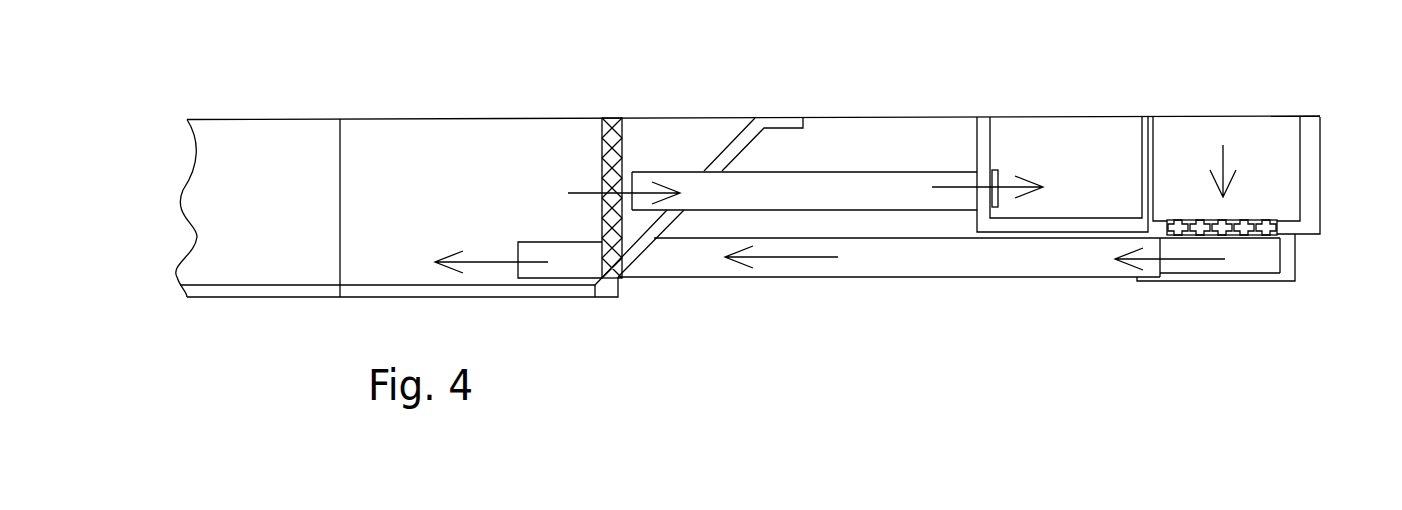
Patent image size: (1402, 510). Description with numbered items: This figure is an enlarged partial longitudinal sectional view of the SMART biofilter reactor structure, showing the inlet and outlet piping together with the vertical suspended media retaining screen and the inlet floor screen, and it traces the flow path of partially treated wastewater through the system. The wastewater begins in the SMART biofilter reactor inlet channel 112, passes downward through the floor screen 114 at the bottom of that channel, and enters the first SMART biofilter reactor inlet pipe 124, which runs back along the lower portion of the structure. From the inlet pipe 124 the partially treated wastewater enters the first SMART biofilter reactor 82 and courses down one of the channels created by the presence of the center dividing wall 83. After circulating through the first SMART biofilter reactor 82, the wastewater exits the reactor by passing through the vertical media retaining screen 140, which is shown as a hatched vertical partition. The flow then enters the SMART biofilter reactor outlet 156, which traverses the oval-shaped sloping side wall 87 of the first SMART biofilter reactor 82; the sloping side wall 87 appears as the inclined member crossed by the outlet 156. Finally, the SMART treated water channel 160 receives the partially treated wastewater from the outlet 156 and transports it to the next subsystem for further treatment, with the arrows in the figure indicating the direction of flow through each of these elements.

The first SMART biofilter reactor 82 is at (392, 100).
The center dividing wall 83 is at (265, 150).
The vertical media retaining screen 140 is at (602, 158).
The oval-shaped sloping side wall 87 is at (737, 145).
The SMART biofilter reactor outlet 156 is at (917, 190).
The SMART treated water channel 160 is at (1097, 147).
The SMART biofilter reactor inlet channel 112 is at (1212, 125).
The floor screen 114 is at (1237, 220).
The first SMART biofilter reactor inlet pipe 124 is at (980, 258).